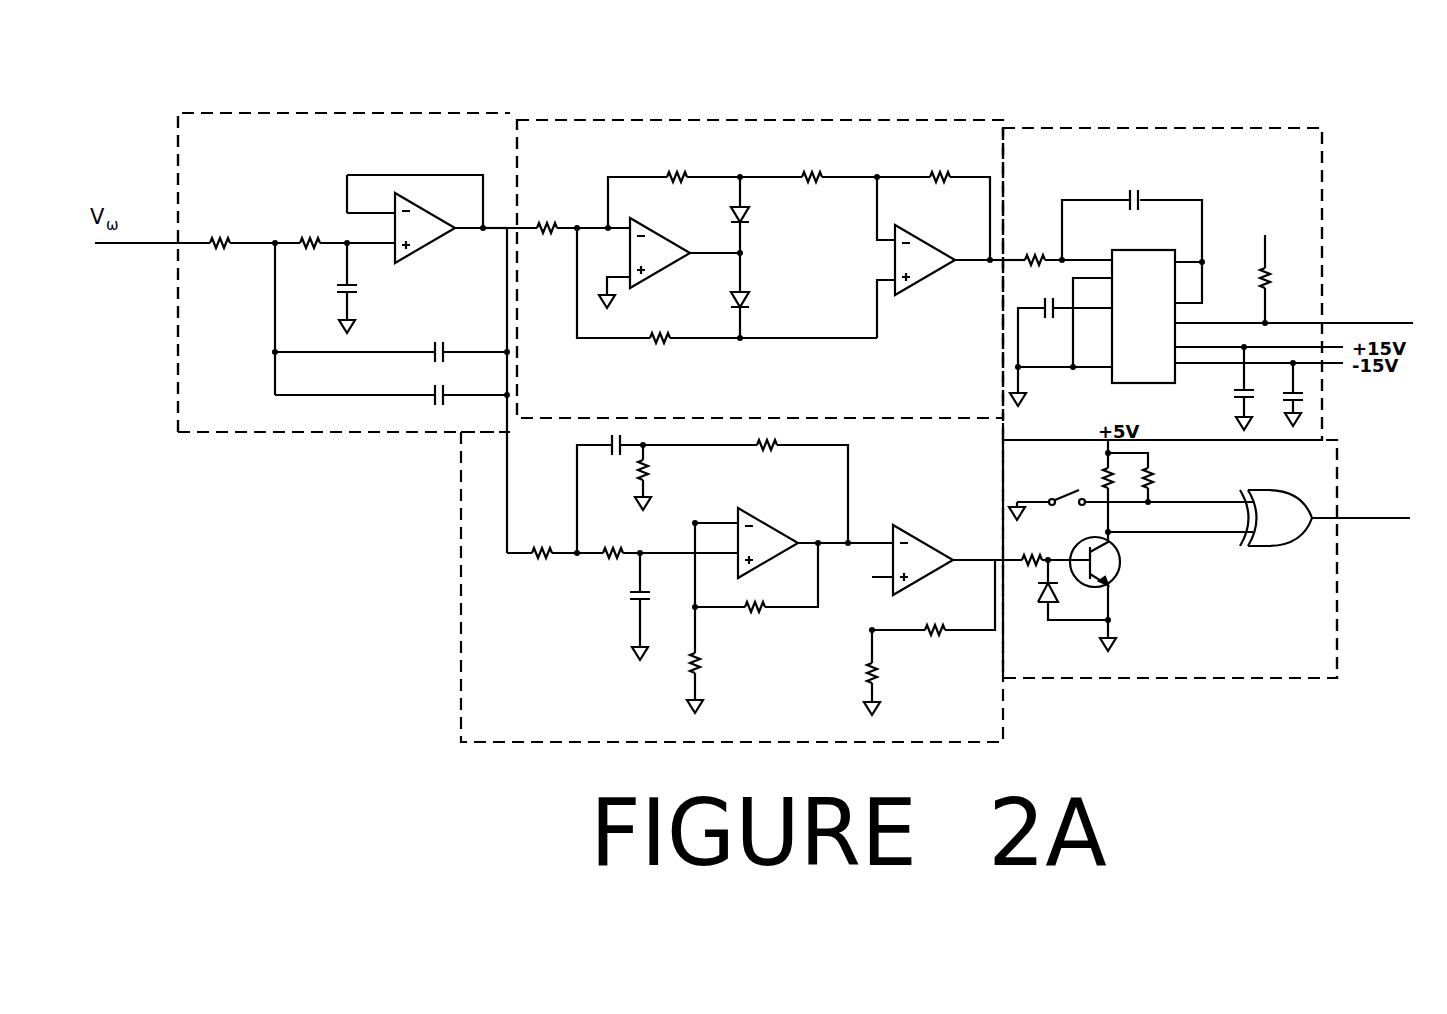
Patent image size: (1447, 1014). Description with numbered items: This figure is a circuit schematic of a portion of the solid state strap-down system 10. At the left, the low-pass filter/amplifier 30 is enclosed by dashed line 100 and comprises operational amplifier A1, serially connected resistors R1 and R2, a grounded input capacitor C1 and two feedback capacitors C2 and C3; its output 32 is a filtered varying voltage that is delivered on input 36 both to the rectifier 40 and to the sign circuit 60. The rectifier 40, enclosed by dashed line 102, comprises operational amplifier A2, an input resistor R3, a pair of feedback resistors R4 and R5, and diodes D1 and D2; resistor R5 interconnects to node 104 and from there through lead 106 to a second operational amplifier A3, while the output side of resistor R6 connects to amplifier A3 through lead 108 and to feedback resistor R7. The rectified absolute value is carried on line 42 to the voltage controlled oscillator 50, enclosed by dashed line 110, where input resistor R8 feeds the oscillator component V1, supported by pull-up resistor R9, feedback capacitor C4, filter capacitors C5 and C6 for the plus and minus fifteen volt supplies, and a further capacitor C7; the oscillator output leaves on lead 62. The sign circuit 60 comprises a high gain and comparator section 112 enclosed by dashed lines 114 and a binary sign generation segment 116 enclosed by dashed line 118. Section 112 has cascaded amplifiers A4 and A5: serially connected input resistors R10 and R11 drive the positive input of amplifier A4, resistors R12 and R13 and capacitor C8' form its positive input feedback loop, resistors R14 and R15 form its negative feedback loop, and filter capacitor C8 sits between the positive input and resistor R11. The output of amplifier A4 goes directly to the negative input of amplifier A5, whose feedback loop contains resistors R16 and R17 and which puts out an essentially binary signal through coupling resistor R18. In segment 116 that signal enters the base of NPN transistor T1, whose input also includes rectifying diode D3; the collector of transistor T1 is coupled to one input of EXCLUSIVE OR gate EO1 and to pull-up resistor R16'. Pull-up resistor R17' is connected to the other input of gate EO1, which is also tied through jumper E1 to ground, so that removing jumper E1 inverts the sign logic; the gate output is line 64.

The solid state strap-down system 10 is at (400, 500).
The low-pass filter/amplifier 30 is at (255, 113).
The dashed line enclosing filter 100 is at (340, 113).
The dashed line enclosing rectifier 102 is at (615, 120).
The rectifier 40 is at (898, 120).
The dashed line enclosing VCO 110 is at (1262, 128).
The voltage controlled oscillator (VCO) 50 is at (1325, 160).
The input 36 is at (510, 235).
The output of filter/amplifier 32 is at (483, 233).
The line 42 is at (1006, 255).
The lead 62 is at (1348, 323).
The line 64 is at (1358, 522).
The sign circuit 60 is at (582, 745).
The high gain and comparator section 112 is at (460, 620).
The dashed lines enclosing section 112 114 is at (460, 640).
The binary sign generation segment 116 is at (1338, 480).
The dashed line enclosing segment 116 118 is at (1338, 608).
The node 104 is at (745, 342).
The lead 106 is at (882, 322).
The lead 108 is at (885, 240).
The resistor R1 is at (215, 242).
The resistor R2 is at (312, 240).
The input resistor R3 is at (548, 225).
The feedback resistor R4 is at (680, 175).
The feedback resistor R5 is at (657, 342).
The resistor R6 is at (812, 175).
The feedback resistor R7 is at (942, 175).
The input resistor R8 is at (1036, 255).
The pull-up resistor R9 is at (1262, 278).
The input resistor R10 is at (542, 562).
The input resistor R11 is at (613, 562).
The resistor R12 is at (772, 447).
The resistor R13 is at (650, 470).
The resistor R14 is at (762, 612).
The resistor R15 is at (700, 660).
The resistor R16 is at (933, 632).
The resistor R17 is at (907, 687).
The coupling resistor R18 is at (1030, 556).
The pull-up resistor R16' is at (1076, 470).
The pull-up resistor R17' is at (1186, 476).
The grounded input capacitor C1 is at (345, 290).
The feedback capacitor C2 is at (437, 347).
The feedback capacitor C3 is at (437, 400).
The feedback capacitor C4 is at (1140, 198).
The filter capacitor C5 is at (1242, 390).
The filter capacitor C6 is at (1296, 393).
The capacitor C7 is at (1016, 330).
The filter capacitor C8 is at (599, 611).
The capacitor C8' is at (610, 494).
The diode D1 is at (745, 215).
The diode D2 is at (748, 298).
The rectifying diode D3 is at (1045, 604).
The operational amplifier A1 is at (430, 200).
The operational amplifier A2 is at (648, 238).
The second operational amplifier A3 is at (915, 238).
The operational amplifier A4 is at (758, 520).
The operational amplifier A5 is at (905, 532).
The NPN transistor T1 is at (1120, 576).
The jumper E1 is at (1066, 498).
The EXCLUSIVE OR gate EO1 is at (1262, 548).
The voltage controlled oscillator component V1 is at (1125, 386).